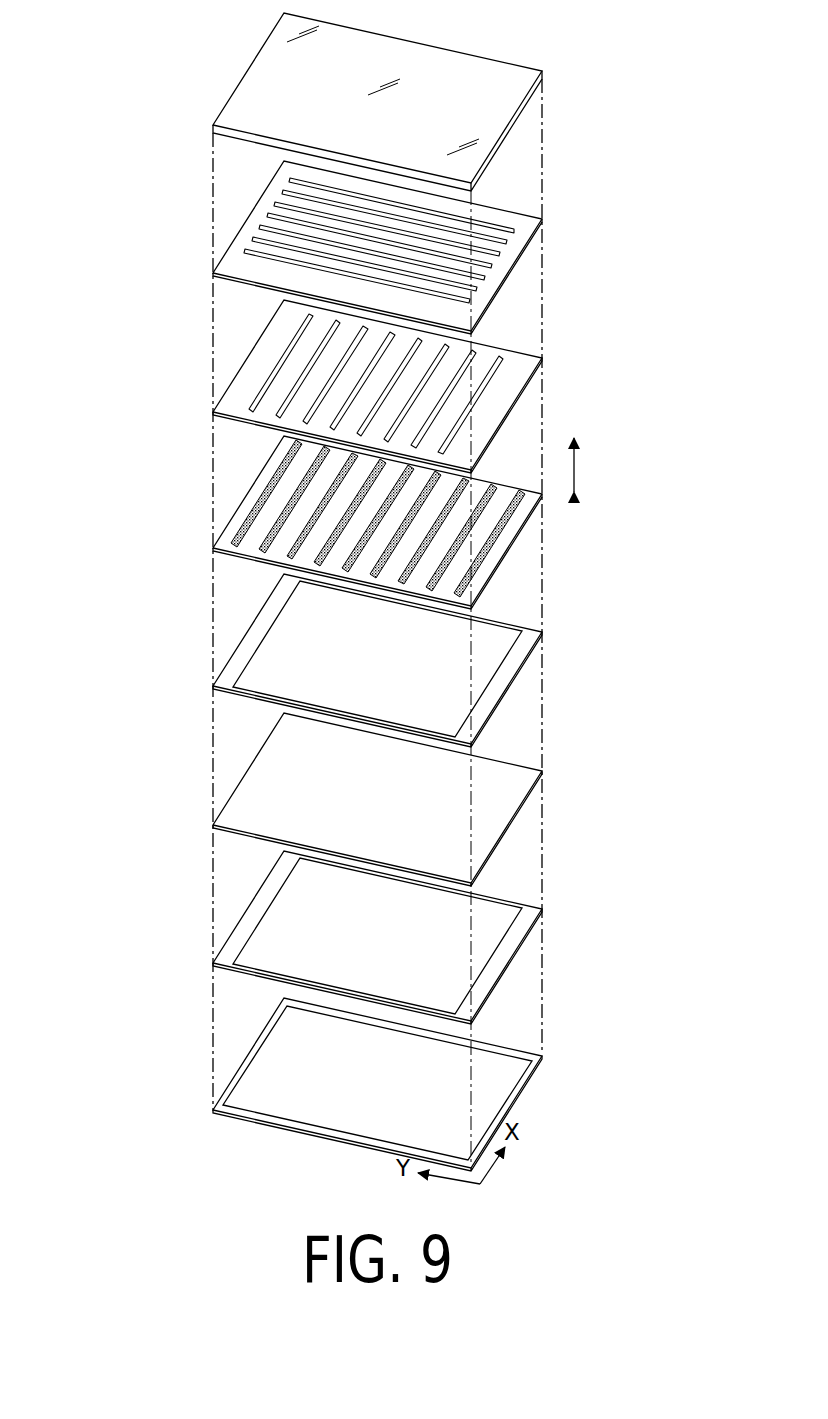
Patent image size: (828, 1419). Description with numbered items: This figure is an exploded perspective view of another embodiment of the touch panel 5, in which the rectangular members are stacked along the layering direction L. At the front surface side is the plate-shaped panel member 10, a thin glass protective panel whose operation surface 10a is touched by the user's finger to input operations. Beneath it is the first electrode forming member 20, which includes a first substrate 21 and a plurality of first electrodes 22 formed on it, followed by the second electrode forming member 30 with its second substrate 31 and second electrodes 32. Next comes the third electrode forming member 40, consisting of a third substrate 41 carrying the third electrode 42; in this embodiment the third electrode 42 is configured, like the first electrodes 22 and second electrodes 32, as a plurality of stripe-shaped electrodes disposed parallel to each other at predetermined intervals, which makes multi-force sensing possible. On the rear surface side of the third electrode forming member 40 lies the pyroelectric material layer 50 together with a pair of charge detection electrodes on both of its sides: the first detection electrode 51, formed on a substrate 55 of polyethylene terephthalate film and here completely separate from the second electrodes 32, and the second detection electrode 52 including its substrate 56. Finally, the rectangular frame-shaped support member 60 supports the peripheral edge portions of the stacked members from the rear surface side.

The touch panel 5 is at (170, 92).
The panel member 10 is at (405, 98).
The operation surface 10a is at (452, 77).
The first electrode forming member 20 is at (382, 242).
The first substrate 21 is at (530, 223).
The first electrodes 22 is at (497, 258).
The second electrode forming member 30 is at (384, 386).
The second substrate 31 is at (513, 388).
The second electrodes 32 is at (305, 395).
The third electrode forming member 40 is at (390, 522).
The third substrate 41 is at (513, 518).
The third electrode 42 is at (247, 523).
The pyroelectric material layer 50 is at (514, 796).
The first detection electrode 51 is at (267, 665).
The second detection electrode 52 is at (272, 942).
The substrate 55 is at (368, 660).
The substrate 56 is at (367, 937).
The support member 60 is at (519, 1094).
The layering direction L is at (576, 465).